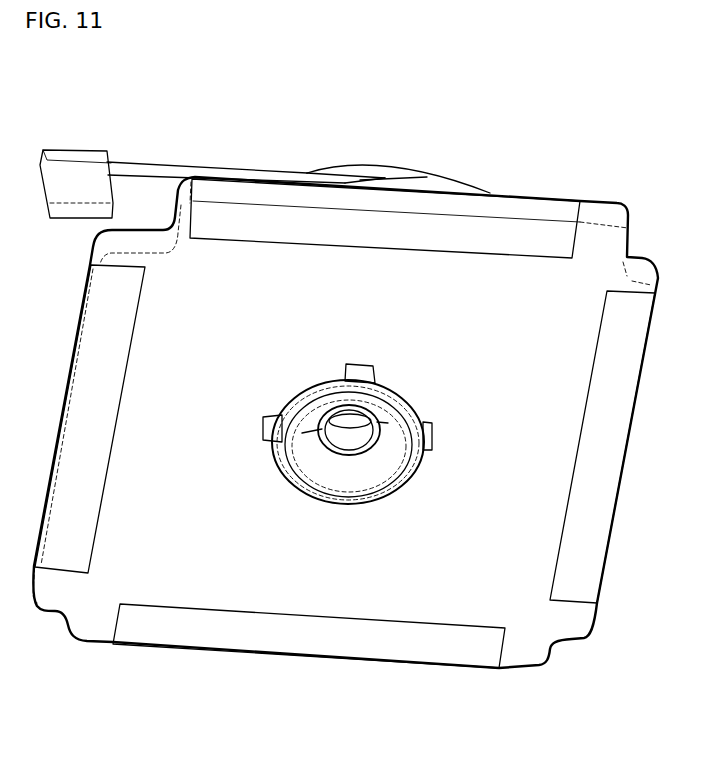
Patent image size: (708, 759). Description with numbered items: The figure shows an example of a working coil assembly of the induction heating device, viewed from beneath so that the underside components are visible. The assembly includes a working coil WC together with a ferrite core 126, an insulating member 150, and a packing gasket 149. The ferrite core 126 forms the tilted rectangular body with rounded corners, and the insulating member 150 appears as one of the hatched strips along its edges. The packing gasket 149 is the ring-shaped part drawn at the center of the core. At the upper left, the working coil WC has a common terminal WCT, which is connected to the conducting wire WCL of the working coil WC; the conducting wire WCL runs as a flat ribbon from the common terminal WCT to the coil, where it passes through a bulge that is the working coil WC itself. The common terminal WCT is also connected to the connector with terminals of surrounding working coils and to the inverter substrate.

The ferrite core 126 is at (597, 213).
The insulating member 150 is at (469, 203).
The packing gasket 149 is at (343, 495).
The common terminal WCT is at (77, 160).
The conducting wire WCL is at (160, 167).
The working coil WC is at (396, 173).